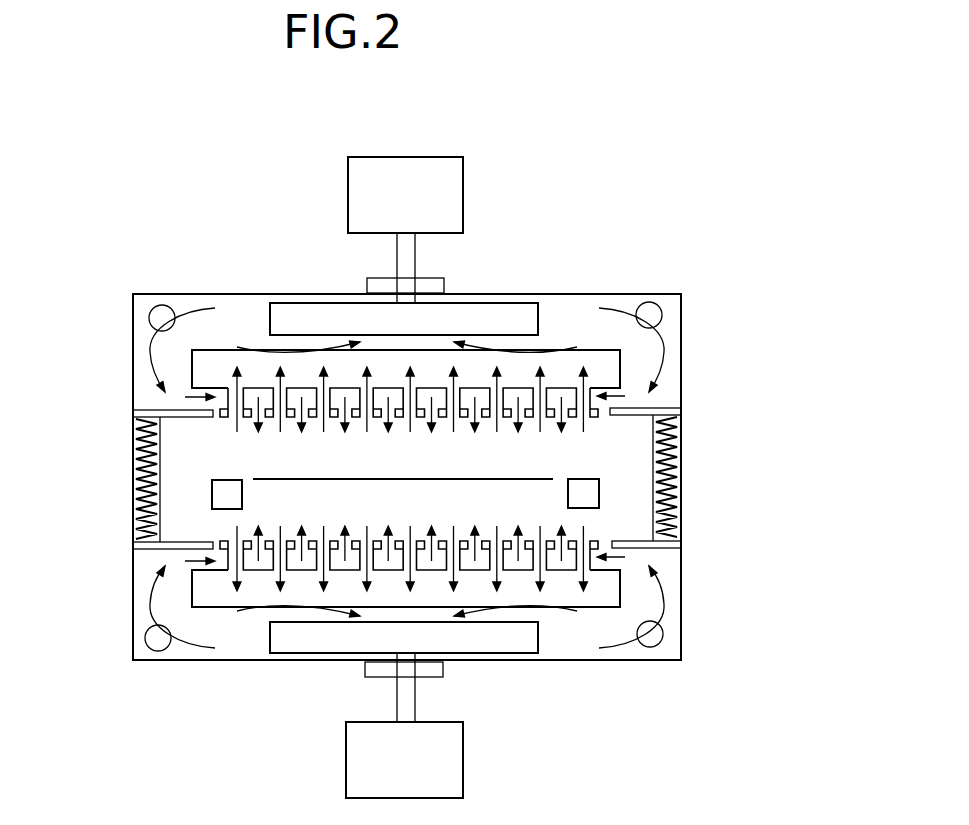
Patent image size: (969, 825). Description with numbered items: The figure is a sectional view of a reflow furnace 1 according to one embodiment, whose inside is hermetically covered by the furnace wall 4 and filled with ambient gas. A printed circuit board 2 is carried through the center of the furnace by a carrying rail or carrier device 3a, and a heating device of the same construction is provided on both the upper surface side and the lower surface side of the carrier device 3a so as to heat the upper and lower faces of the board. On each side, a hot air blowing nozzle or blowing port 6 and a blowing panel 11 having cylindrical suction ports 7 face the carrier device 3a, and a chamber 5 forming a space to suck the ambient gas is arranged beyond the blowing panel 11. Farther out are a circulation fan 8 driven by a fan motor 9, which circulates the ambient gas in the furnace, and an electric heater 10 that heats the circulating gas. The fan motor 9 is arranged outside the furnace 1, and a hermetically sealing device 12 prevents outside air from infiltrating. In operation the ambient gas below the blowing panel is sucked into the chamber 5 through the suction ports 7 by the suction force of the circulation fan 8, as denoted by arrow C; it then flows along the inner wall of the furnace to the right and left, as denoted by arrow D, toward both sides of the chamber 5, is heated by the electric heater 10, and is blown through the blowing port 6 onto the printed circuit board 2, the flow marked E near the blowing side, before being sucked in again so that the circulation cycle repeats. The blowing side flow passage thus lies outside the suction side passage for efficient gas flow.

The reflow furnace 1 is at (618, 115).
The printed circuit board 2 is at (290, 478).
The carrying rail (carrier device) 3a is at (212, 497).
The housing 4 is at (682, 605).
The chamber 5 is at (585, 347).
The blowing port (hot air blowing nozzle) 6 is at (561, 419).
The cylindrical suction port 7 is at (583, 422).
The circulation fan 8 is at (493, 302).
The fan motor 9 is at (463, 192).
The electric heater 10 is at (150, 318).
The blowing panel 11 is at (178, 410).
The hermetically sealing device 12 is at (367, 288).
The arrow C is at (407, 388).
The arrow D is at (215, 308).
The exhaust flow E is at (393, 400).